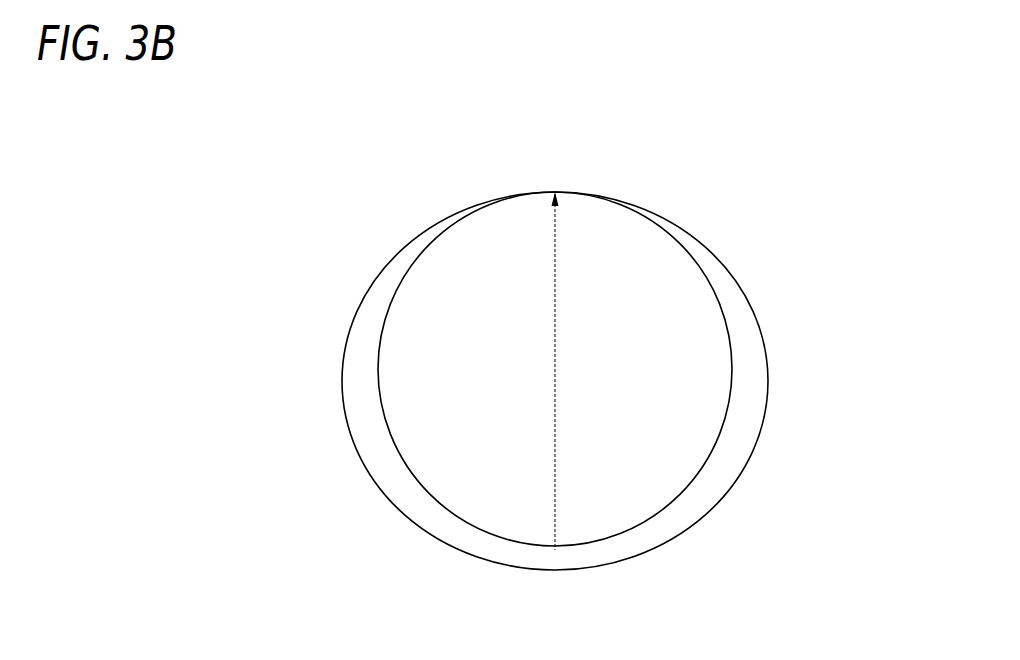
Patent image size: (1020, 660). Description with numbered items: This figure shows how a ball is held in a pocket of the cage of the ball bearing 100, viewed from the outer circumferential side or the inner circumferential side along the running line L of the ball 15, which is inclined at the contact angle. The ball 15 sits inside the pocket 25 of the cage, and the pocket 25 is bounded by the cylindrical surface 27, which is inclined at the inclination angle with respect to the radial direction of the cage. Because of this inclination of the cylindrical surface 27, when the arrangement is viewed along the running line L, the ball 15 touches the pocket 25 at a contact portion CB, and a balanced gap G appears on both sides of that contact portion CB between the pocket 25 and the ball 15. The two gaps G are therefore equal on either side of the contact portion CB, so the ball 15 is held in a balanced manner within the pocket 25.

The ball bearing 100 is at (386, 204).
The ball 15 is at (658, 520).
The pocket 25 is at (745, 333).
The cylindrical surface 27 is at (376, 481).
The contact portion CB is at (556, 190).
The balanced gap G is at (462, 210).
The running line L is at (549, 512).